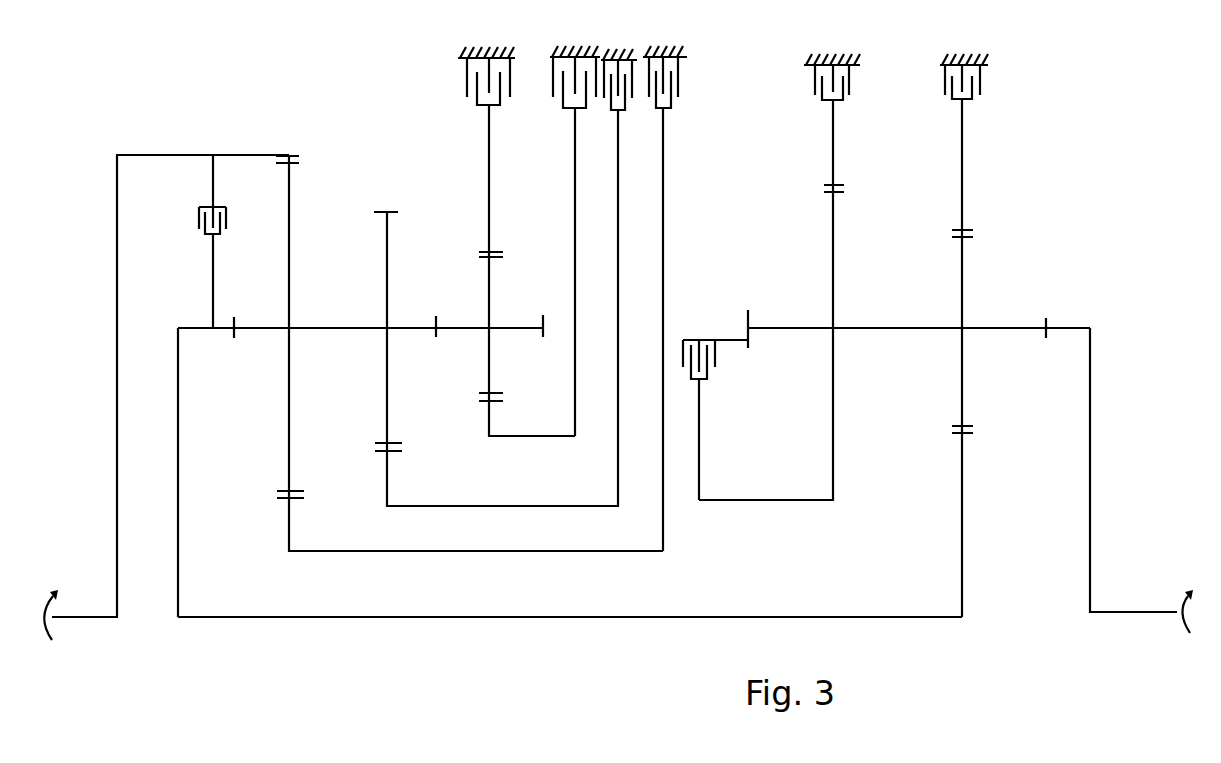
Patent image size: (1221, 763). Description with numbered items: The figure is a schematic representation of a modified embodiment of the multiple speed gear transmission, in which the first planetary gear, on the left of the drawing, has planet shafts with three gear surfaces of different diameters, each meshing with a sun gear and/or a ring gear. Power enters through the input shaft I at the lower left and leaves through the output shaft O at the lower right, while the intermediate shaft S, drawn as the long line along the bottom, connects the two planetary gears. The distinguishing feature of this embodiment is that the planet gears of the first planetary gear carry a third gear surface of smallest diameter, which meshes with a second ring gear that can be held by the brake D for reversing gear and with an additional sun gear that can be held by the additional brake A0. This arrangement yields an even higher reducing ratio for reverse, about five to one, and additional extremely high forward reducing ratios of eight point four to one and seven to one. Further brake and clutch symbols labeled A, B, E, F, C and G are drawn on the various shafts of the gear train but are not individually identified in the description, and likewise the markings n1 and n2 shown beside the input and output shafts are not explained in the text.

The input shaft I is at (90, 617).
The output shaft O is at (1140, 612).
The intermediate shaft S is at (498, 617).
The input speed n1 is at (39, 615).
The output speed n2 is at (1197, 611).
The clutch C is at (204, 261).
The clutch G is at (715, 407).
The brake D is at (486, 62).
The additional brake A0 is at (575, 64).
The brake A is at (619, 70).
The brake B is at (665, 64).
The brake E is at (832, 64).
The brake F is at (964, 63).